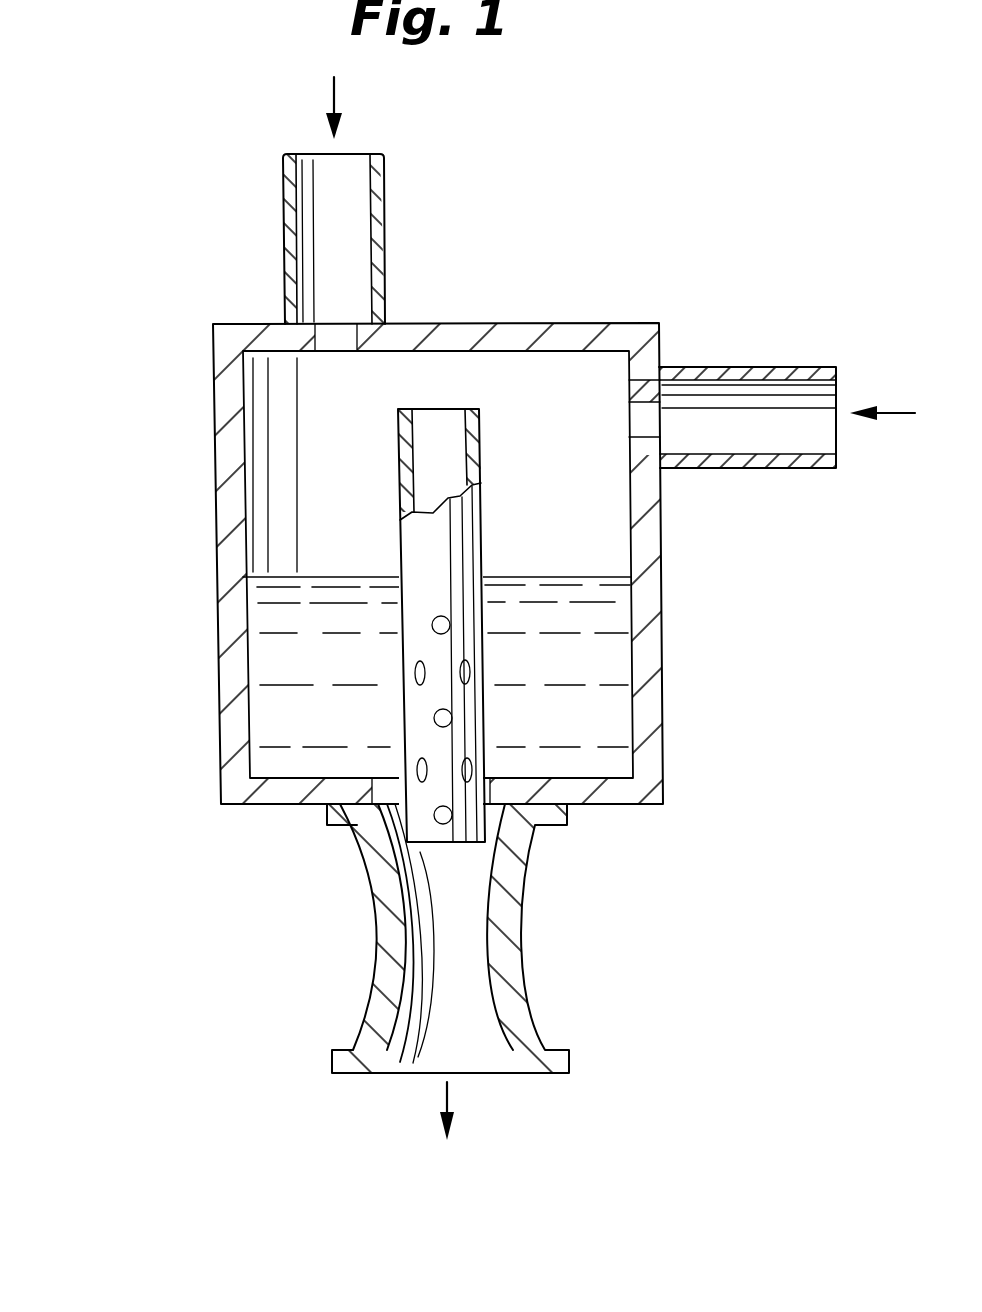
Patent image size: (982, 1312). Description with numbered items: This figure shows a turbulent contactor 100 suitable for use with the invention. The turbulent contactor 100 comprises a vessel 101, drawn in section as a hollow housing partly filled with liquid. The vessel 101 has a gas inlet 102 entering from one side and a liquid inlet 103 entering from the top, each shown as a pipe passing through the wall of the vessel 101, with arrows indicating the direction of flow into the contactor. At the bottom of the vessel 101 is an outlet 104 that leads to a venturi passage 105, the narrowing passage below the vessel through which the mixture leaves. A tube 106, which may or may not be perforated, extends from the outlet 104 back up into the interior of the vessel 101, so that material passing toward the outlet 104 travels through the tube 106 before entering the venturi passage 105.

The turbulent contactor 100 is at (197, 503).
The vessel 101 is at (663, 749).
The gas inlet 102 is at (813, 367).
The liquid inlet 103 is at (385, 217).
The outlet 104 is at (535, 826).
The venturi passage 105 is at (430, 920).
The tube 106 is at (413, 651).